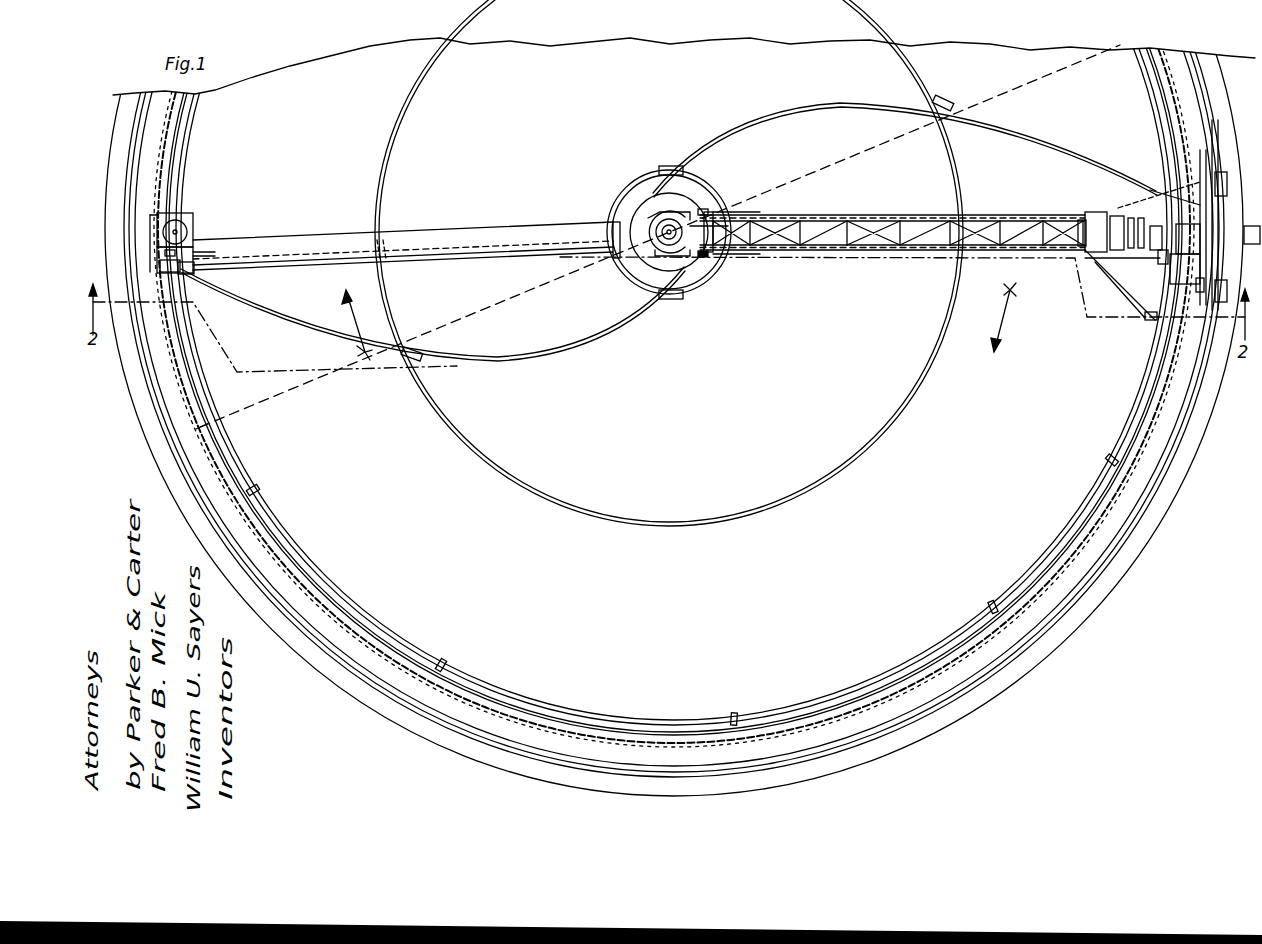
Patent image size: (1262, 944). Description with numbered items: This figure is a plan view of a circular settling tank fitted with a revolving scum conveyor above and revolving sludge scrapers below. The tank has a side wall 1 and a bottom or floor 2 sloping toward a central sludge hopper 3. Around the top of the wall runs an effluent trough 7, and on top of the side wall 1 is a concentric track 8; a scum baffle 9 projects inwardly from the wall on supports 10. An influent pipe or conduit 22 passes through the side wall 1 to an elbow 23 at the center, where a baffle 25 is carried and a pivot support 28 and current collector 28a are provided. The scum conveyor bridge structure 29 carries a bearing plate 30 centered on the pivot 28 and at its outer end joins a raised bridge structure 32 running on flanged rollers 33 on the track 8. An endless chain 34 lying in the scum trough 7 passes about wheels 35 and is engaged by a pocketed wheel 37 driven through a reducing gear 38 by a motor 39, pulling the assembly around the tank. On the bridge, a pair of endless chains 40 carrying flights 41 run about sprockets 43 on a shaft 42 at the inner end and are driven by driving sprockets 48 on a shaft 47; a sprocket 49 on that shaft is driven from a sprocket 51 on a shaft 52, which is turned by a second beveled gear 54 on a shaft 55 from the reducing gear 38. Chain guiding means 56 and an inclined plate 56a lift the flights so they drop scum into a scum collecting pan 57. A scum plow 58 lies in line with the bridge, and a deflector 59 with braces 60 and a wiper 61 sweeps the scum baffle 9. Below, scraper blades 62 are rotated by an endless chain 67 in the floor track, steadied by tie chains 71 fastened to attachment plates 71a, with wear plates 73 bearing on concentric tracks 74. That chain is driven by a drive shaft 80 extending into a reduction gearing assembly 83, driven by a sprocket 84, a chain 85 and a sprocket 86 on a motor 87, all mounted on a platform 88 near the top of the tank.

The side wall 1 is at (1040, 645).
The bottom or floor 2 is at (302, 94).
The sludge hopper 3 is at (650, 175).
The effluent trough 7 is at (1062, 590).
The track 8 is at (1200, 78).
The scum baffle 9 is at (250, 485).
The supports 10 is at (256, 491).
The influent pipe or conduit 22 is at (470, 232).
The elbow 23 is at (612, 236).
The baffle 25 is at (642, 190).
The pivot support 28 is at (656, 222).
The current collector 28a is at (690, 250).
The bridge structure 29 is at (915, 251).
The bearing plate 30 is at (650, 240).
The raised bridge structure 32 is at (1165, 190).
The flanged rollers 33 is at (1224, 174).
The endless chain 34 is at (1178, 112).
The wheels 35 is at (1203, 185).
The pocketed wheel 37 is at (1247, 228).
The reducing gear 38 is at (1186, 230).
The motor 39 is at (1200, 292).
The endless chains 40 is at (815, 215).
The flights 41 is at (726, 223).
The shaft 42 is at (712, 212).
The sprockets 43 is at (706, 196).
The shaft 47 is at (1128, 259).
The driving sprockets 48 is at (1131, 218).
The sprocket 49 is at (1141, 250).
The sprocket 51 is at (1162, 264).
The shaft 52 is at (1152, 228).
The second beveled gear 54 is at (1180, 262).
The shaft 55 is at (1155, 225).
The chain guiding means 56 is at (1092, 212).
The inclined plate 56a is at (1080, 228).
The scum collecting pan 57 is at (1117, 216).
The scum plow 58 is at (885, 215).
The deflector 59 is at (1087, 255).
The supports or braces 60 is at (1105, 265).
The wiper 61 is at (1148, 320).
The blades 62 is at (770, 112).
The endless chain 67 is at (1130, 440).
The tie chains 71 is at (821, 152).
The angle or attachment plate 71a is at (205, 427).
The wear plate 73 is at (943, 100).
The track 74 is at (630, 278).
The drive shaft 80 is at (187, 227).
The reduction gearing assembly 83 is at (178, 218).
The sprocket 84 is at (196, 262).
The chain 85 is at (184, 276).
The sprocket 86 is at (164, 252).
The motor 87 is at (165, 268).
The platform 88 is at (157, 220).